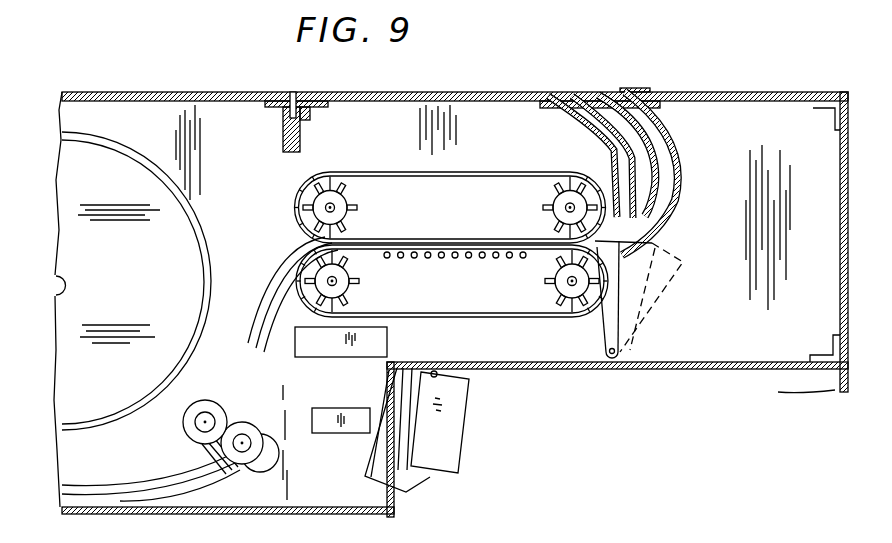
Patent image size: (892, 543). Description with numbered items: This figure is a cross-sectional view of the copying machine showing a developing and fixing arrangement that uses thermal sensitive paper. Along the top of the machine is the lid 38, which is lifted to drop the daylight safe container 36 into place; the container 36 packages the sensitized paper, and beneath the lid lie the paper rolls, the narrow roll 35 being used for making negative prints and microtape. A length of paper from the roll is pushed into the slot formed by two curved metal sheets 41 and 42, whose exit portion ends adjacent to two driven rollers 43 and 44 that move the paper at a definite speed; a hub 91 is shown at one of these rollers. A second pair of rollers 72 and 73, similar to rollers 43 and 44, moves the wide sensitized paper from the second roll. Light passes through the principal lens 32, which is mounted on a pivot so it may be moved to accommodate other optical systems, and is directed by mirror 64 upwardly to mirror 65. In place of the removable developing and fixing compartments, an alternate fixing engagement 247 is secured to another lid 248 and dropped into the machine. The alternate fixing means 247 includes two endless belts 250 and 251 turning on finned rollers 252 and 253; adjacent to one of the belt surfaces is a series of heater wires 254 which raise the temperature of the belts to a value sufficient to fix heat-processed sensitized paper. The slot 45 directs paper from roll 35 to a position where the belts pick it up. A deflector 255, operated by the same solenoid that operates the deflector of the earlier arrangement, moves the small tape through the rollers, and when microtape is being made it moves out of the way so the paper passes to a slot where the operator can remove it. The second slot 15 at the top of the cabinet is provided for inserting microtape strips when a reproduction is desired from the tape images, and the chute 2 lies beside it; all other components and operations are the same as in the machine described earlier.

The lid 38 is at (197, 92).
The alternate fixing engagement 247 is at (480, 124).
The second slot 15 is at (560, 100).
The card chute 2 is at (610, 95).
The lid 248 is at (741, 93).
The daylight safe container 36 is at (210, 193).
The roll 35 is at (188, 252).
The slot 45 is at (280, 267).
The endless belt 250 is at (524, 158).
The endless belt 251 is at (469, 319).
The finned roller 252 is at (340, 197).
The finned roller 253 is at (345, 268).
The heater wires 254 is at (464, 262).
The deflector 255 is at (652, 249).
The mirror 65 is at (323, 358).
The mirror 64 is at (333, 428).
The principle lens 32 is at (453, 418).
The curved metal sheet 41 is at (101, 491).
The curved metal sheet 42 is at (208, 474).
The roller 72 is at (197, 448).
The roller 73 is at (255, 472).
The driven roller 44 is at (247, 423).
The driven roller 43 is at (217, 390).
The roller hub 91 is at (195, 423).